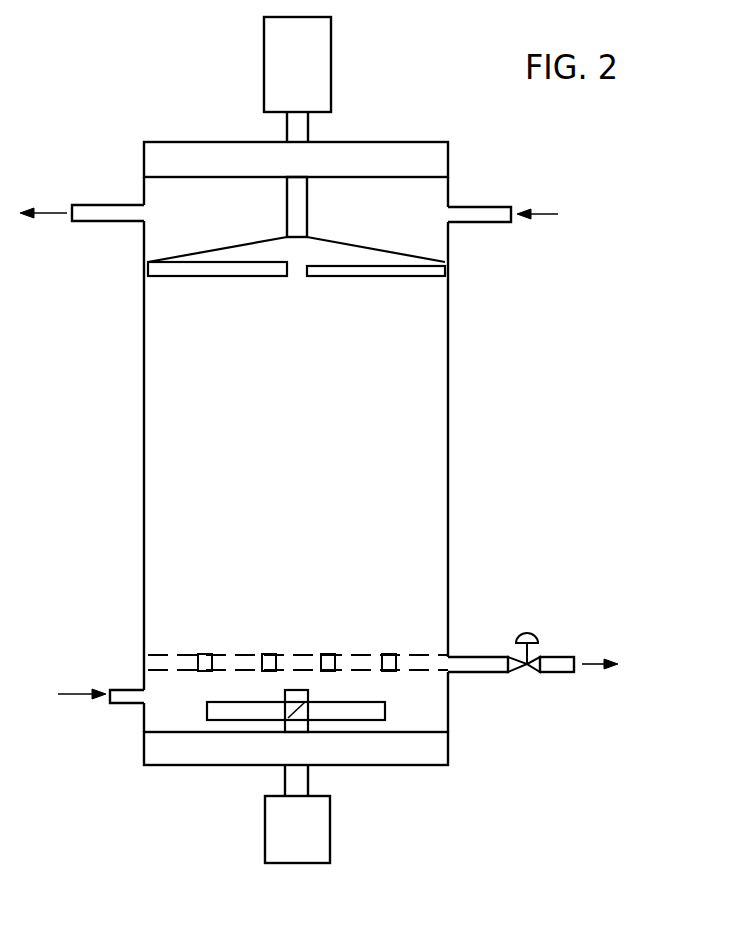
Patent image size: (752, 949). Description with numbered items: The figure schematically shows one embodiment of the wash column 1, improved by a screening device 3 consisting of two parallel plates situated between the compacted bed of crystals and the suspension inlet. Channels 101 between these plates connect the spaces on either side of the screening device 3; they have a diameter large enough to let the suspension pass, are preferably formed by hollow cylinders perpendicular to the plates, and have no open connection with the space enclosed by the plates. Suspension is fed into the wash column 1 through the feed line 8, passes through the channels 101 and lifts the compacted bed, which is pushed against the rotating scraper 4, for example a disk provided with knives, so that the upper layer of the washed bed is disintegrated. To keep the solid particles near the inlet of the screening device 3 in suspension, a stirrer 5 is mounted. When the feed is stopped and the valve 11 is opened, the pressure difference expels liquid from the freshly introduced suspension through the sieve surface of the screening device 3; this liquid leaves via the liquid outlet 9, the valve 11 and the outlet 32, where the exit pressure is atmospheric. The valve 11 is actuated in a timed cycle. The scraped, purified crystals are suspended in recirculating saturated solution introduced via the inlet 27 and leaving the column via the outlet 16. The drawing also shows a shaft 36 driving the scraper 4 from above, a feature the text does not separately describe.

The wash column 1 is at (143, 457).
The screening device 3 is at (293, 663).
The rotating scraper 4 is at (352, 256).
The stirrer 5 is at (352, 713).
The feed line 8 is at (122, 699).
The liquid outlet 9 is at (480, 665).
The valve 11 is at (535, 662).
The column outlet 16 is at (107, 209).
The saturated solution inlet 27 is at (482, 217).
The liquid outlet 32 is at (553, 666).
The rotating shaft 36 is at (297, 212).
The channels 101 is at (208, 653).